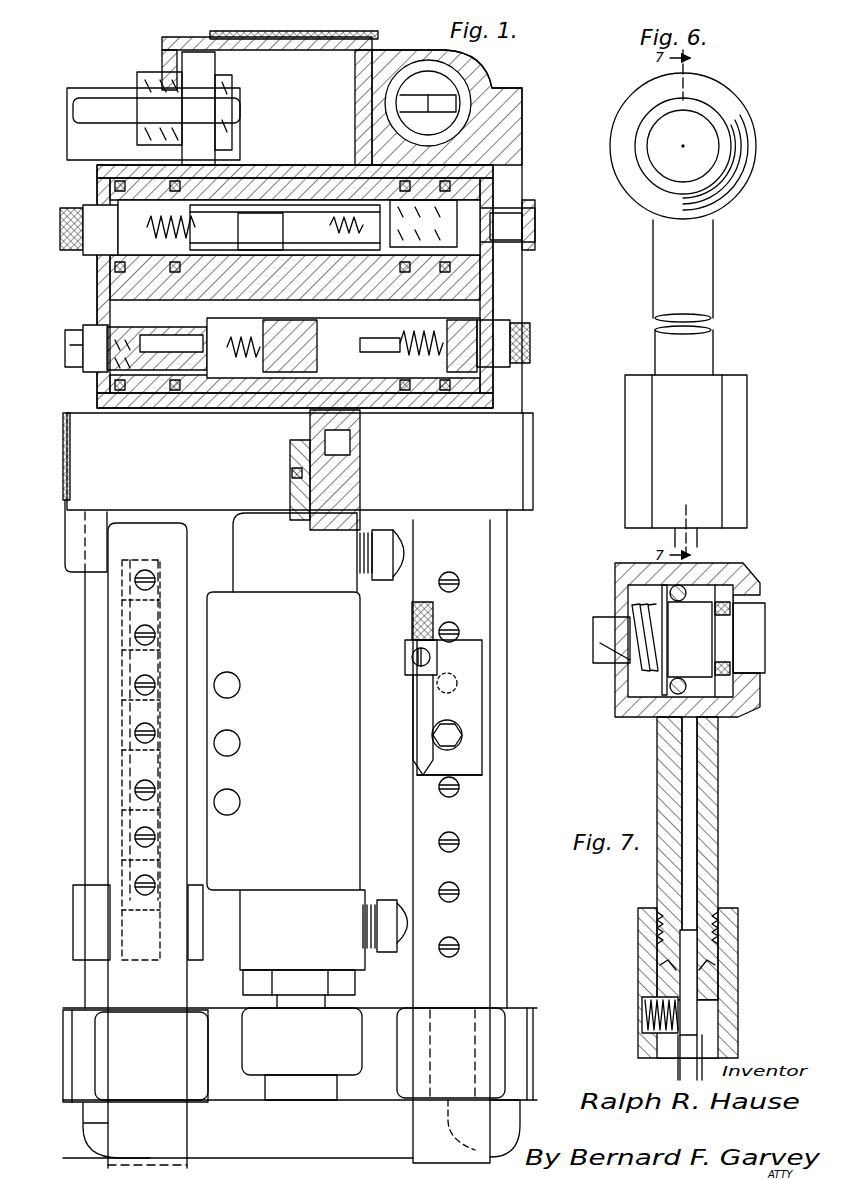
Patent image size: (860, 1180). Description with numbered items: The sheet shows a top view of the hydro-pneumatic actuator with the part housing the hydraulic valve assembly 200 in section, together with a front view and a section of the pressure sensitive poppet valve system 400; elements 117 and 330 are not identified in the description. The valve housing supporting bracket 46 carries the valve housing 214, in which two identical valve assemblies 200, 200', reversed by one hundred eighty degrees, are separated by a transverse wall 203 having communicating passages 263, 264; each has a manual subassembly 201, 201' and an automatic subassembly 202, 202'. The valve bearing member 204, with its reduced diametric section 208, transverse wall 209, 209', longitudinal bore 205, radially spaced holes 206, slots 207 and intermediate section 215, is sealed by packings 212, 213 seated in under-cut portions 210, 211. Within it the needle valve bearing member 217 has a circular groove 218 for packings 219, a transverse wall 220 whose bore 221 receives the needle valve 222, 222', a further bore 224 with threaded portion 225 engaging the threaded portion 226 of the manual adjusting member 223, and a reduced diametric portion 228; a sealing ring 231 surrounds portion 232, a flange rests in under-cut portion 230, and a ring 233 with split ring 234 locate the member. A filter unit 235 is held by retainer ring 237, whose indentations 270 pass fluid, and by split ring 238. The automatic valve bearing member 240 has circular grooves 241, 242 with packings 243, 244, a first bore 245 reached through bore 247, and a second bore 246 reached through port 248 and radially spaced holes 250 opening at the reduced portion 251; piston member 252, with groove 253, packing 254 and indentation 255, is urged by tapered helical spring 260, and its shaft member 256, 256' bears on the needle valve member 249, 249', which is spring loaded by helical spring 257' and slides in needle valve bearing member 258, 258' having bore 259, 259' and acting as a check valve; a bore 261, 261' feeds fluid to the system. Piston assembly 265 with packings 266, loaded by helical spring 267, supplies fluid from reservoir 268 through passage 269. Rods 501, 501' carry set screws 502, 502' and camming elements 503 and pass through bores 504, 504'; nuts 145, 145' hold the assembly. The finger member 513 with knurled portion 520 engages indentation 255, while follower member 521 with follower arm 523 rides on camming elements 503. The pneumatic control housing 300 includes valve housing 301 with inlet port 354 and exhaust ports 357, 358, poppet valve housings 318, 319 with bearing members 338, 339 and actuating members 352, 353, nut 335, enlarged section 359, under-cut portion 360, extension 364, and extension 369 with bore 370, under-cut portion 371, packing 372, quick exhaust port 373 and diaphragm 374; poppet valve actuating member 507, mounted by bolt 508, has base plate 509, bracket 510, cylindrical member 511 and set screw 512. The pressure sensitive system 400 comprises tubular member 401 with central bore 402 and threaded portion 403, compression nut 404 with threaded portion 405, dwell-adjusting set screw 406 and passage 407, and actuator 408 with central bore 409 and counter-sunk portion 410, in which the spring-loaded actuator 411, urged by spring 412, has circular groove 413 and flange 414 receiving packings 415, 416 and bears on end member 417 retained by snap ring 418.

In FIG. 1, the top plate 117 is at (300, 32).
In FIG. 1, the housing 268 is at (312, 48).
In FIG. 1, the boss 257' is at (447, 231).
In FIG. 1, the bolt 258' is at (453, 156).
In FIG. 1, the seat 261' is at (449, 169).
In FIG. 1, the passage 259' is at (504, 166).
In FIG. 1, the shaft 249' is at (515, 195).
In FIG. 1, the valve unit 200' is at (562, 179).
In FIG. 1, the bar 46 is at (125, 165).
In FIG. 1, the pin bracket 267 is at (178, 88).
In FIG. 1, the cylinder 266 is at (243, 66).
In FIG. 1, the column 265 is at (242, 128).
In FIG. 1, the passage 269 is at (378, 165).
In FIG. 1, the knob 201' is at (70, 214).
In FIG. 1, the spring 203 is at (275, 265).
In FIG. 1, the piston 207 is at (292, 262).
In FIG. 1, the spool 256' is at (423, 223).
In FIG. 1, the plug 202' is at (540, 225).
In FIG. 1, the sleeve 222' is at (247, 188).
In FIG. 1, the port 209' is at (325, 172).
In FIG. 1, the knob 202 is at (65, 356).
In FIG. 1, the spool 256 is at (157, 348).
In FIG. 1, the rod 218 is at (360, 338).
In FIG. 1, the spring 221 is at (400, 345).
In FIG. 1, the spool end 224 is at (493, 339).
In FIG. 1, the spring 205 is at (495, 336).
In FIG. 1, the seat 206 is at (495, 351).
In FIG. 1, the knob 201 is at (557, 343).
In FIG. 1, the valve unit 200 is at (575, 366).
In FIG. 1, the seat 261 is at (77, 223).
In FIG. 1, the passage 259 is at (80, 237).
In FIG. 1, the bore 264 is at (110, 258).
In FIG. 1, the seal 243 is at (100, 268).
In FIG. 1, the sleeve 241 is at (100, 285).
In FIG. 1, the bore 240 is at (110, 298).
In FIG. 1, the port 247 is at (100, 328).
In FIG. 1, the pin 253 is at (90, 343).
In FIG. 1, the pin 255 is at (90, 355).
In FIG. 1, the port 245 is at (95, 368).
In FIG. 1, the bore 252 is at (100, 385).
In FIG. 1, the wall 254 is at (112, 395).
In FIG. 1, the port 263 is at (500, 268).
In FIG. 1, the port 228 is at (505, 277).
In FIG. 1, the sleeve 222 is at (543, 281).
In FIG. 1, the port 219 is at (510, 305).
In FIG. 1, the port 220 is at (510, 315).
In FIG. 1, the port 225 is at (545, 322).
In FIG. 1, the port 226 is at (545, 337).
In FIG. 1, the port 223 is at (560, 355).
In FIG. 1, the passage 231 is at (560, 362).
In FIG. 1, the bore 204 is at (520, 375).
In FIG. 1, the seal 233 is at (505, 387).
In FIG. 1, the seal 234 is at (500, 400).
In FIG. 1, the passage 214 is at (520, 422).
In FIG. 1, the gib 520 is at (63, 460).
In FIG. 1, the piston 330 is at (320, 520).
In FIG. 1, the valve 374 is at (305, 486).
In FIG. 1, the bore 370 is at (345, 478).
In FIG. 1, the cylinder 369 is at (355, 490).
In FIG. 1, the seal 371 is at (355, 500).
In FIG. 1, the port 372 is at (350, 515).
In FIG. 1, the column 360 is at (290, 515).
In FIG. 1, the port 359 is at (320, 510).
In FIG. 1, the port 260 is at (125, 400).
In FIG. 1, the port 246 is at (160, 400).
In FIG. 1, the port 242 is at (180, 400).
In FIG. 1, the port 250 is at (150, 405).
In FIG. 1, the port 244 is at (192, 402).
In FIG. 1, the port 251 is at (165, 408).
In FIG. 1, the port 248 is at (220, 400).
In FIG. 1, the port 249 is at (201, 439).
In FIG. 1, the port 258 is at (201, 450).
In FIG. 1, the port 209 is at (267, 415).
In FIG. 1, the port 235 is at (295, 400).
In FIG. 1, the port 270 is at (300, 400).
In FIG. 1, the port 237 is at (310, 420).
In FIG. 1, the port 238 is at (300, 440).
In FIG. 1, the passage 373 is at (300, 470).
In FIG. 1, the port 208 is at (365, 400).
In FIG. 1, the port 212 is at (355, 410).
In FIG. 1, the port 217 is at (365, 420).
In FIG. 1, the port 232 is at (420, 400).
In FIG. 1, the port 210 is at (425, 400).
In FIG. 1, the port 215 is at (445, 402).
In FIG. 1, the port 211 is at (470, 400).
In FIG. 1, the port 213 is at (485, 405).
In FIG. 1, the port 230 is at (430, 400).
In FIG. 1, the column 513 is at (65, 540).
In FIG. 1, the bar 501 is at (108, 845).
In FIG. 1, the rack 503 is at (122, 775).
In FIG. 1, the screws 502 is at (92, 732).
In FIG. 1, the block 521 is at (75, 905).
In FIG. 1, the block 523 is at (185, 930).
In FIG. 1, the plate 504 is at (114, 1056).
In FIG. 1, the hook 145' is at (90, 1130).
In FIG. 1, the body 318 is at (300, 585).
In FIG. 1, the hole 357 is at (240, 685).
In FIG. 1, the hole 354 is at (240, 743).
In FIG. 1, the hole 358 is at (240, 802).
In FIG. 1, the body 301 is at (348, 738).
In FIG. 1, the unit 300 is at (362, 808).
In FIG. 1, the screw 352 is at (413, 553).
In FIG. 1, the stud 338 is at (365, 565).
In FIG. 1, the block 319 is at (372, 972).
In FIG. 1, the block 335 is at (305, 1000).
In FIG. 1, the base 364 is at (320, 1075).
In FIG. 1, the bar 501' is at (492, 836).
In FIG. 1, the screws 502' is at (505, 764).
In FIG. 1, the bracket 507 is at (490, 705).
In FIG. 1, the nut 508 is at (455, 735).
In FIG. 1, the plate 509 is at (470, 765).
In FIG. 1, the pin 511 is at (420, 695).
In FIG. 1, the block 512 is at (408, 657).
In FIG. 1, the knurled knob 510 is at (435, 640).
In FIG. 1, the screw 353 is at (418, 925).
In FIG. 1, the stud 339 is at (390, 950).
In FIG. 1, the plate 504' is at (494, 1054).
In FIG. 1, the hook 145 is at (477, 1113).
In FIG. 6, the valve 400 is at (740, 92).
In FIG. 7, the valve 400 is at (648, 732).
In FIG. 6, the bore 411 is at (700, 165).
In FIG. 7, the bore 411 is at (680, 641).
In FIG. 6, the head 408 is at (740, 128).
In FIG. 7, the head 408 is at (745, 585).
In FIG. 6, the stem 401 is at (692, 285).
In FIG. 7, the stem 401 is at (720, 800).
In FIG. 6, the body 404 is at (740, 465).
In FIG. 7, the body 404 is at (725, 985).
In FIG. 7, the head 410 is at (735, 568).
In FIG. 7, the spring 416 is at (660, 592).
In FIG. 7, the plug 417 is at (625, 615).
In FIG. 7, the plug 413 is at (745, 647).
In FIG. 7, the seal 409 is at (760, 605).
In FIG. 7, the seal 415 is at (735, 690).
In FIG. 7, the plate 418 is at (625, 585).
In FIG. 7, the spring seat 412 is at (620, 650).
In FIG. 7, the wall 414 is at (640, 710).
In FIG. 7, the bore 402 is at (690, 848).
In FIG. 7, the thread 403 is at (715, 930).
In FIG. 7, the seat 405 is at (705, 955).
In FIG. 7, the spring 406 is at (660, 1010).
In FIG. 7, the bore 407 is at (695, 1022).